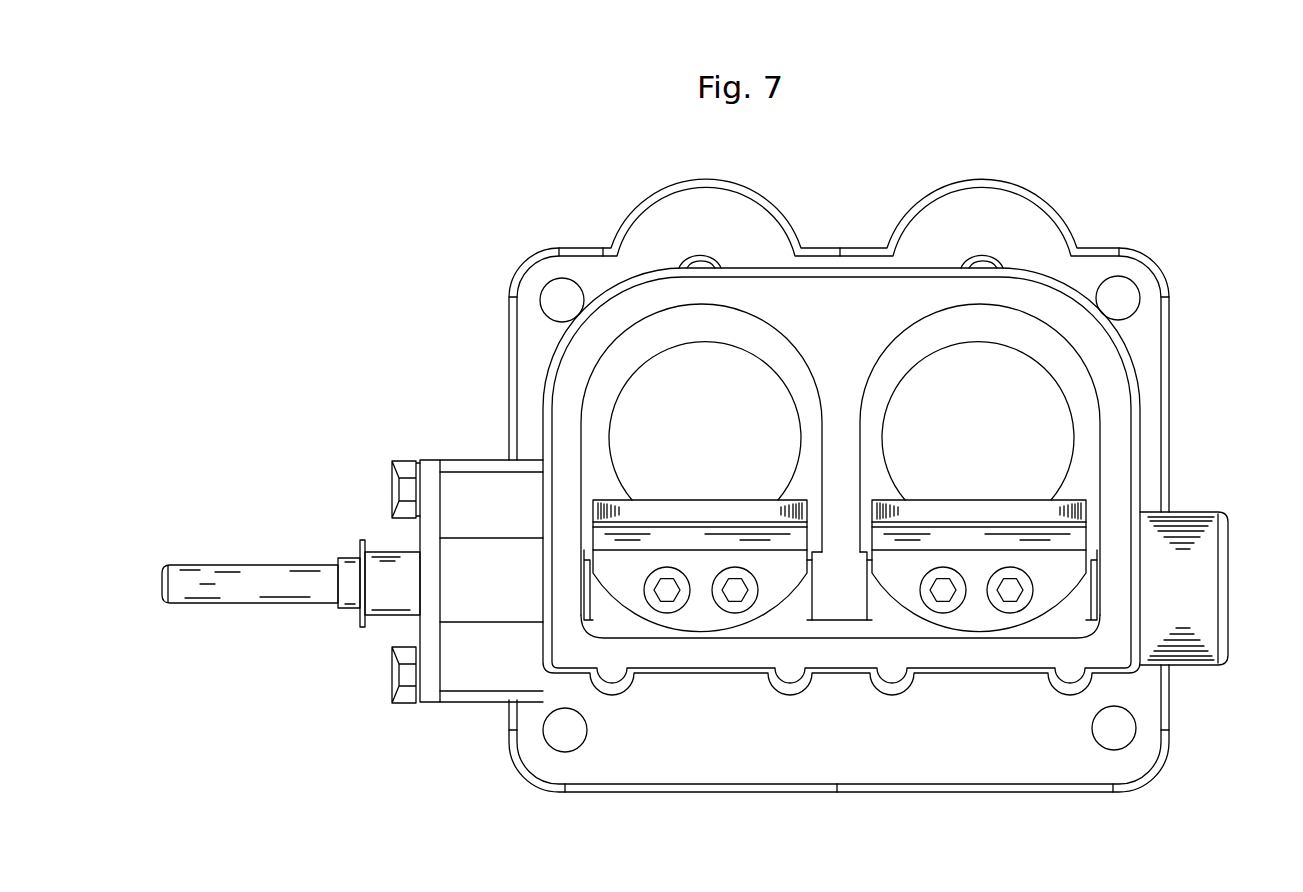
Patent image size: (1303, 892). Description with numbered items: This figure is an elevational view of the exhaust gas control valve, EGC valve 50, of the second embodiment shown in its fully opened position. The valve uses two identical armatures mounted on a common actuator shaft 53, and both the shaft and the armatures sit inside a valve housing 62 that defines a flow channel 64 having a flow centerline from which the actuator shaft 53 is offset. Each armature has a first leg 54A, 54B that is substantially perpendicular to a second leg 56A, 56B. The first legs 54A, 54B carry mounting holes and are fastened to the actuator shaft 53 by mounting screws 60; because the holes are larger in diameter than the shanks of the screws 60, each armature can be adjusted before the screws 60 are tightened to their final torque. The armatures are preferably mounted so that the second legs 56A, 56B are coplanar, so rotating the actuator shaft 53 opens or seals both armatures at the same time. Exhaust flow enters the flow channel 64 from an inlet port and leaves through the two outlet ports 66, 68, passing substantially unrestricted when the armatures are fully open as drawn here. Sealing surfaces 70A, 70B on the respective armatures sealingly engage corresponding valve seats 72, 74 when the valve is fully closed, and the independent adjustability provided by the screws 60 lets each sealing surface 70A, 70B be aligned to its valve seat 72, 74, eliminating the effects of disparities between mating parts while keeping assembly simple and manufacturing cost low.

The EGC valve 50 is at (1015, 165).
The actuator shaft 53 is at (602, 612).
The first leg 54A is at (697, 620).
The first leg 54B is at (1067, 563).
The second leg 56A is at (608, 508).
The second leg 56B is at (1087, 502).
The mounting screws 60 is at (1002, 603).
The valve housing 62 is at (818, 268).
The flow channel 64 is at (898, 283).
The outlet port 66 is at (710, 370).
The outlet port 68 is at (1020, 397).
The sealing surface 70A is at (648, 492).
The sealing surface 70B is at (1066, 494).
The valve seat 72 is at (655, 325).
The valve seat 74 is at (1013, 323).